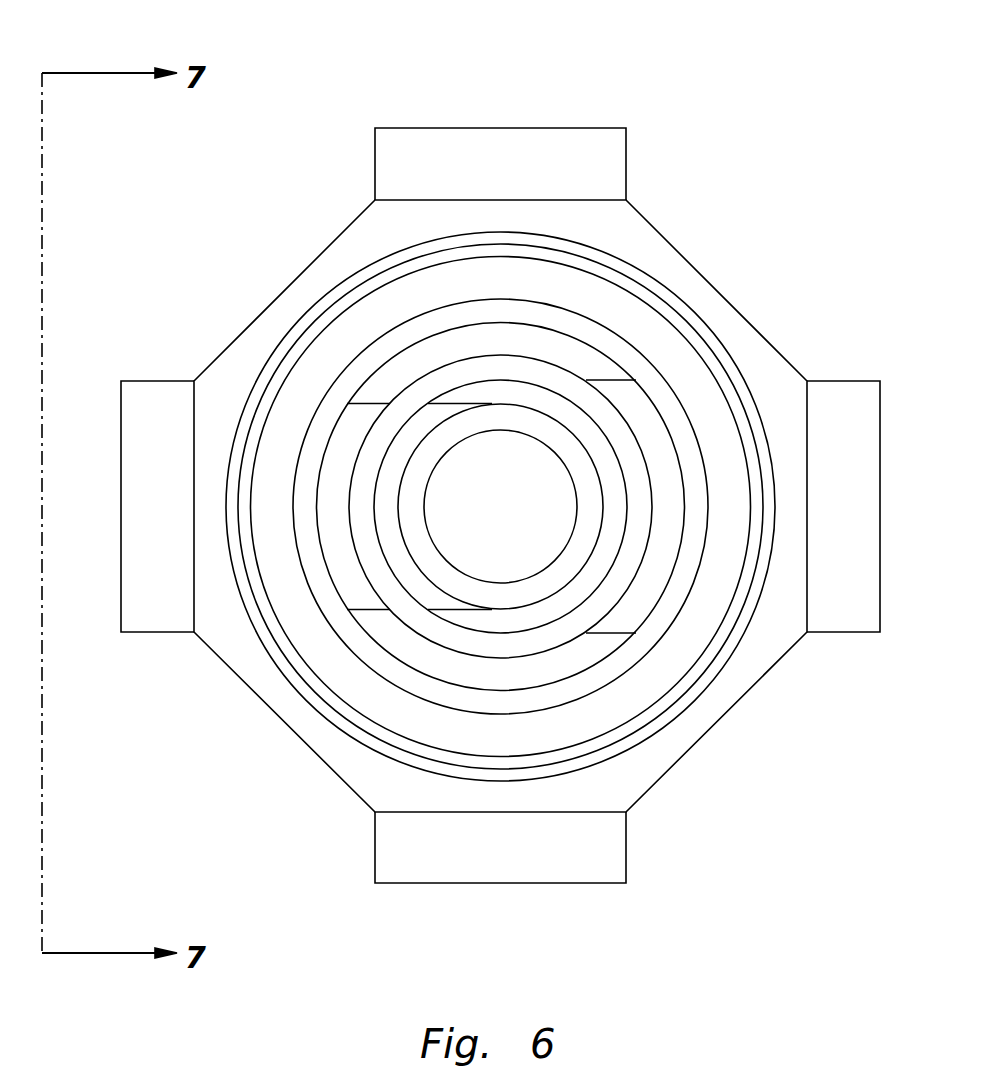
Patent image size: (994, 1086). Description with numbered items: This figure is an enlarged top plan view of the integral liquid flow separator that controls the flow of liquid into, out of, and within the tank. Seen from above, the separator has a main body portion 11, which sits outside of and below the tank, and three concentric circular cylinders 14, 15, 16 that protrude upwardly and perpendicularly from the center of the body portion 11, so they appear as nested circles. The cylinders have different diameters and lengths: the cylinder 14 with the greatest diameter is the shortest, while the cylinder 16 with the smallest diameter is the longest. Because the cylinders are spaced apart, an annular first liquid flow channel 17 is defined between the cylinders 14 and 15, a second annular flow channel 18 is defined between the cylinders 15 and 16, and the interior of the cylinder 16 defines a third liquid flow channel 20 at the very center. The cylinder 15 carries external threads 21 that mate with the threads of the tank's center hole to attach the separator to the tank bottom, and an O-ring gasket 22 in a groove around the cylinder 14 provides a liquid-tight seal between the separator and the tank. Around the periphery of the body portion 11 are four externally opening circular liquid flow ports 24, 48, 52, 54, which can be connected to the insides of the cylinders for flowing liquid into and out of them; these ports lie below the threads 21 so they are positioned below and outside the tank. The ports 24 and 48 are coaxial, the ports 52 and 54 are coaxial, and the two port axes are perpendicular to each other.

The main body portion 11 is at (348, 245).
The cylinder 14 is at (650, 652).
The cylinder 15 is at (573, 372).
The cylinder 16 is at (413, 558).
The first liquid flow channel 17 is at (385, 385).
The second annular flow channel 18 is at (542, 402).
The third liquid flow channel 20 is at (523, 522).
The external threads 21 is at (623, 700).
The O-ring gasket 22 is at (281, 660).
The liquid flow port 24 is at (121, 610).
The liquid flow port 48 is at (868, 381).
The liquid flow port 52 is at (408, 883).
The liquid flow port 54 is at (602, 128).